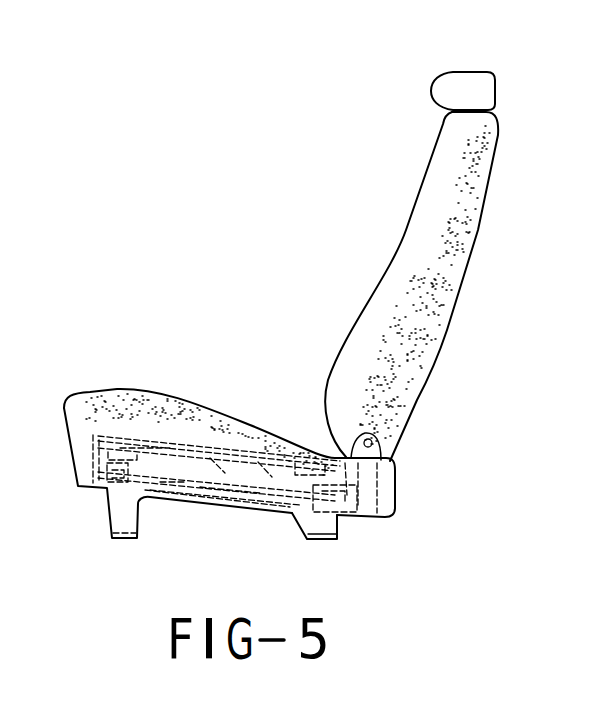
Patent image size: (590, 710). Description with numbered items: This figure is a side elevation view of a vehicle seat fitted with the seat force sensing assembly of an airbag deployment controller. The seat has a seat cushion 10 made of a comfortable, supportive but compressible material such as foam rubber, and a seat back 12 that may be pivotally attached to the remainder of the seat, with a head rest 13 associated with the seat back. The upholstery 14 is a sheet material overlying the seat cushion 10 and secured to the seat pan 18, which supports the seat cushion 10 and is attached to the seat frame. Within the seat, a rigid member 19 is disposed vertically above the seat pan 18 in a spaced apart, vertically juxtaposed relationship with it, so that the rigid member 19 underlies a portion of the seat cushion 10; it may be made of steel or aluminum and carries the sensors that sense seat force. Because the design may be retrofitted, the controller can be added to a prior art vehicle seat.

The seat cushion 10 is at (249, 294).
The seat back 12 is at (433, 207).
The head rest 13 is at (452, 80).
The upholstery 14 is at (236, 419).
The seat pan 18 is at (88, 462).
The rigid member 19 is at (103, 438).